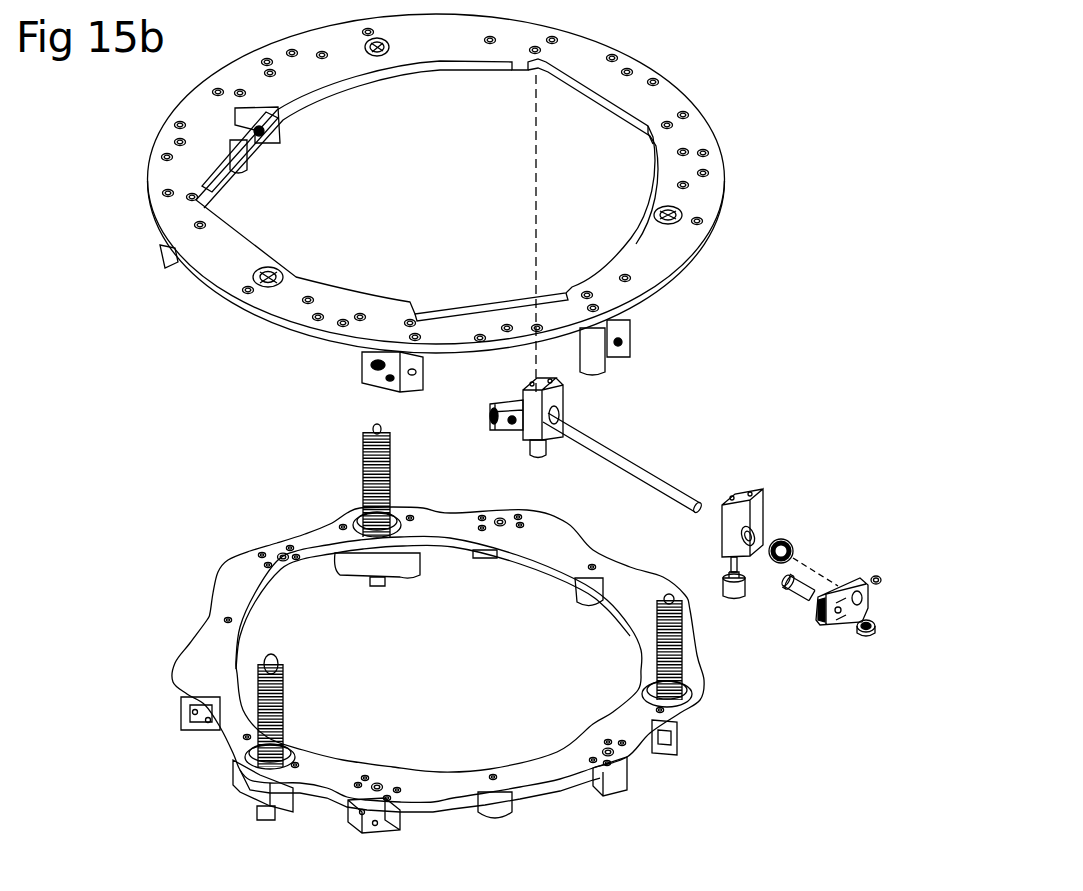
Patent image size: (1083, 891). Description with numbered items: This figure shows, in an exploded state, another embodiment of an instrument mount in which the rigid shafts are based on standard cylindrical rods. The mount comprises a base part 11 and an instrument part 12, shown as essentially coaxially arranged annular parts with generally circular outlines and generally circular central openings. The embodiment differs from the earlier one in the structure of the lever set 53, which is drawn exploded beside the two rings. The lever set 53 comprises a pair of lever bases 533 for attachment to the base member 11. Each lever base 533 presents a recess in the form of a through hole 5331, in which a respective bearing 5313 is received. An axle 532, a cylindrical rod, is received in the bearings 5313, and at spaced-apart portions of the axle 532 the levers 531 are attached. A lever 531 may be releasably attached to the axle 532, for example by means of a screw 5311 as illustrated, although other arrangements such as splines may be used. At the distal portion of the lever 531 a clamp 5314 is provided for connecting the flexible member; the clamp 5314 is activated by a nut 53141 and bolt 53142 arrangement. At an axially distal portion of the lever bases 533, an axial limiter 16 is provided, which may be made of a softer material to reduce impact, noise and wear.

The base part 11 is at (706, 198).
The instrument part 12 is at (583, 777).
The axial limiter 16 is at (734, 600).
The lever set 53 is at (730, 380).
The lever 531 is at (838, 585).
The screw 5311 is at (910, 557).
The bearing 5313 is at (785, 541).
The clamp 5314 is at (833, 627).
The nut 53141 is at (799, 596).
The bolt 53142 is at (871, 637).
The axle 532 is at (633, 464).
The lever base 533 is at (563, 392).
The through hole 5331 is at (751, 527).